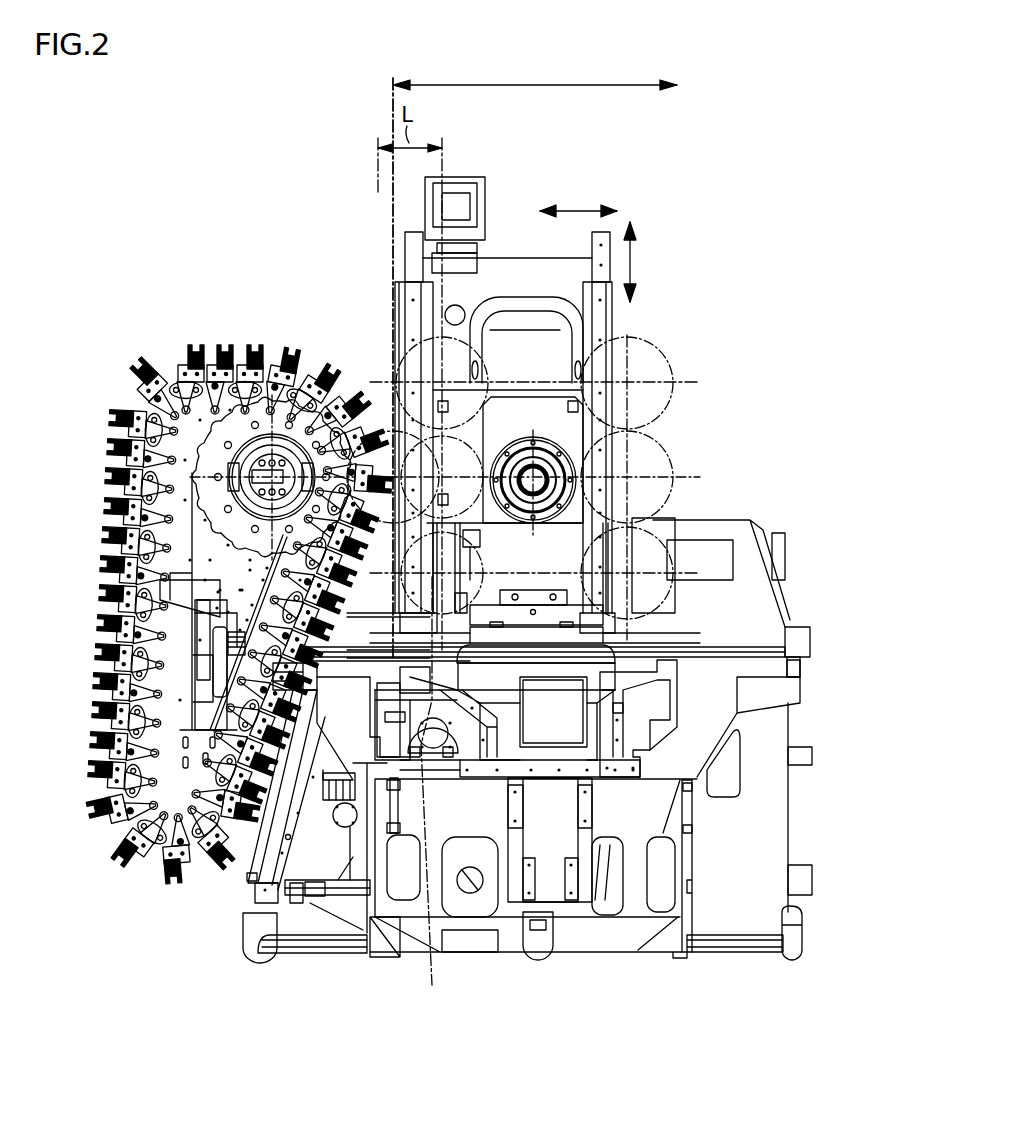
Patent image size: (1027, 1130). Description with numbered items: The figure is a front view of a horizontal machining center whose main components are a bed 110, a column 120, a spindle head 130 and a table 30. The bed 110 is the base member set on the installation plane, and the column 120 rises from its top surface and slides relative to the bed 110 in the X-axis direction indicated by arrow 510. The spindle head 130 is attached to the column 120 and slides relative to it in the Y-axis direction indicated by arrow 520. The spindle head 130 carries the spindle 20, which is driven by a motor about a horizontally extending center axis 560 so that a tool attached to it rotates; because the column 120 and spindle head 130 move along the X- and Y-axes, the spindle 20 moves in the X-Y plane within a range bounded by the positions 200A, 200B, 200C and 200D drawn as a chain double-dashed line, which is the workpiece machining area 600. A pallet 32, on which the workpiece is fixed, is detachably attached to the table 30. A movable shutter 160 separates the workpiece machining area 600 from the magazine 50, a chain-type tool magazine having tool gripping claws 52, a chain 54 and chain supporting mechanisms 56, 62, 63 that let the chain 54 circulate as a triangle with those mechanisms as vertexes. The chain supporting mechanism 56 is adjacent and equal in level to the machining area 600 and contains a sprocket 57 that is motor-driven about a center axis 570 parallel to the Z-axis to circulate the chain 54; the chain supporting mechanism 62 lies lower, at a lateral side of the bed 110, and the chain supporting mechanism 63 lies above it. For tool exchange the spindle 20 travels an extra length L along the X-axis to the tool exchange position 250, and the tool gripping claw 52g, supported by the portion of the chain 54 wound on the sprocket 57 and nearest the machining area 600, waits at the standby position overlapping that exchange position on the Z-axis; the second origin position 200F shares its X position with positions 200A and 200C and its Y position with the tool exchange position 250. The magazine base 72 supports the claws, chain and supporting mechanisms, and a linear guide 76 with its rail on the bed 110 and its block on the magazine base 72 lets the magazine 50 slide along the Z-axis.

The workpiece machining area 600 is at (537, 83).
The arrow 510 is at (580, 208).
The arrow 520 is at (636, 262).
The column 120 is at (512, 270).
The movable shutter 160 is at (392, 239).
The spindle head 130 is at (565, 447).
The spindle 20 is at (578, 478).
The center axis 560 is at (620, 500).
The position 200A is at (372, 302).
The position 200B is at (675, 395).
The position 200C is at (432, 795).
The position 200D is at (668, 533).
The second origin position 200F is at (368, 378).
The pallet 32 is at (600, 633).
The table 30 is at (740, 713).
The bed 110 is at (767, 817).
The magazine 50 is at (157, 352).
The tool gripping claw 52 is at (143, 392).
The chain supporting mechanism 63 is at (140, 425).
The chain 54 is at (125, 444).
The chain supporting mechanism 56 is at (195, 500).
The sprocket 57 is at (255, 538).
The tool gripping claw 52g is at (295, 556).
The chain supporting mechanism 62 is at (167, 797).
The center axis 570 is at (225, 343).
The tool exchange position 250 is at (310, 370).
The magazine base 72 is at (300, 830).
The linear guide 76 is at (296, 903).